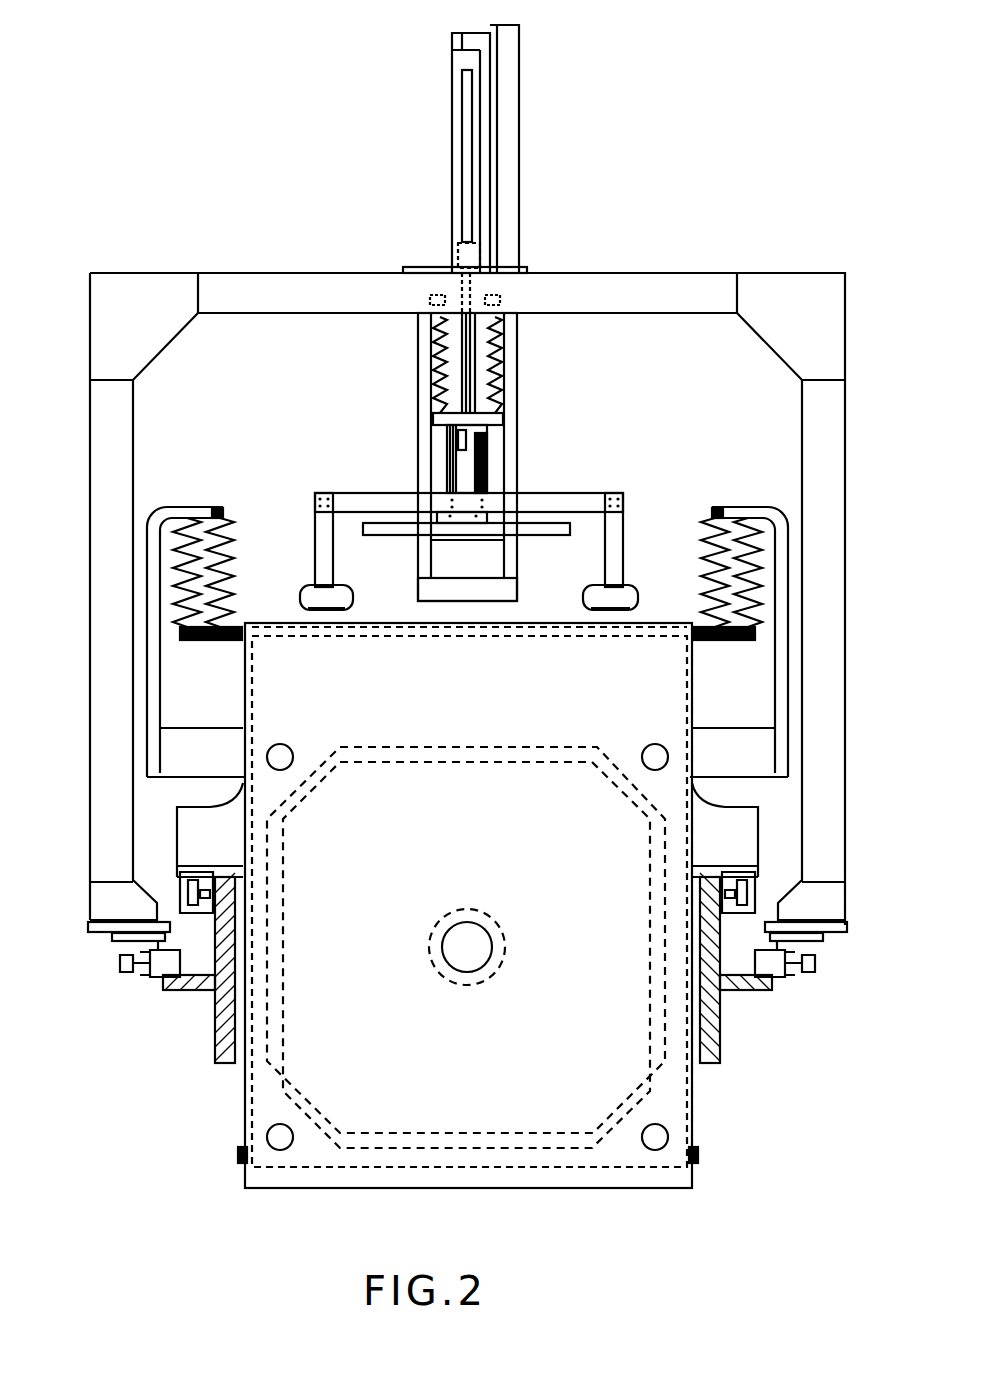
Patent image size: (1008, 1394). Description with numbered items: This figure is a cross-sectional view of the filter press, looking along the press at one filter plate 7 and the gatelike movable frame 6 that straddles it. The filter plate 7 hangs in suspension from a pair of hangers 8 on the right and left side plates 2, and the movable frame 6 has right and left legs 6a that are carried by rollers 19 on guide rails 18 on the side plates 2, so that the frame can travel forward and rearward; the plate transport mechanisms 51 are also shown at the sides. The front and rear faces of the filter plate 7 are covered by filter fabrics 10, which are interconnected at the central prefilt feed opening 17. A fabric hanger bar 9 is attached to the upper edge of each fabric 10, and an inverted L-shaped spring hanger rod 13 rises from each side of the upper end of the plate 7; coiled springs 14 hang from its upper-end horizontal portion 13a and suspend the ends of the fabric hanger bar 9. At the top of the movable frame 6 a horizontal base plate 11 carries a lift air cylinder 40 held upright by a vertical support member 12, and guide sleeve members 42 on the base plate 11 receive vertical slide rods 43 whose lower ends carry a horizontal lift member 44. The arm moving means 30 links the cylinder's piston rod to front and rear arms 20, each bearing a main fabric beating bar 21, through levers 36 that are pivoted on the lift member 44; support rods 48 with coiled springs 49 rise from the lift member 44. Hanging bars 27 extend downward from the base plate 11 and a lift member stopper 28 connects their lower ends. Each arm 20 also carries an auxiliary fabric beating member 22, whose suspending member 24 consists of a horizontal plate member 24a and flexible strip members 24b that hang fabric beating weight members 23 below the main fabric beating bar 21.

The side plate 2 is at (225, 1063).
The movable frame 6 is at (637, 272).
The leg 6a is at (133, 415).
The filter plate 7 is at (320, 1170).
The hanger 8 is at (180, 830).
The fabric hanger bar 9 is at (208, 640).
The filter fabric 10 is at (455, 1105).
The base plate 11 is at (525, 268).
The vertical support member 12 is at (519, 105).
The spring hanger rod 13 is at (147, 565).
The upper-end horizontal portion 13a is at (218, 507).
The coiled spring 14 is at (228, 560).
The prefilt feed opening 17 is at (467, 968).
The guide rail 18 is at (195, 992).
The roller 19 is at (165, 980).
The arm 20 is at (450, 450).
The main fabric beating bar 21 is at (545, 533).
The auxiliary fabric beating member 22 is at (625, 502).
The fabric beating weight member 23 is at (343, 610).
The suspending member 24 is at (315, 493).
The horizontal plate member 24a is at (607, 493).
The flexible strip member 24b is at (318, 572).
The hanging bar 27 is at (418, 428).
The lift member stopper 28 is at (517, 595).
The arm moving means 30 is at (415, 365).
The lever 36 is at (450, 445).
The lift air cylinder 40 is at (452, 55).
The guide sleeve member 42 is at (455, 250).
The slide rod 43 is at (462, 78).
The lift member 44 is at (490, 420).
The support rod 48 is at (500, 362).
The coiled spring 49 is at (500, 392).
The plate transport mechanism 51 is at (180, 895).